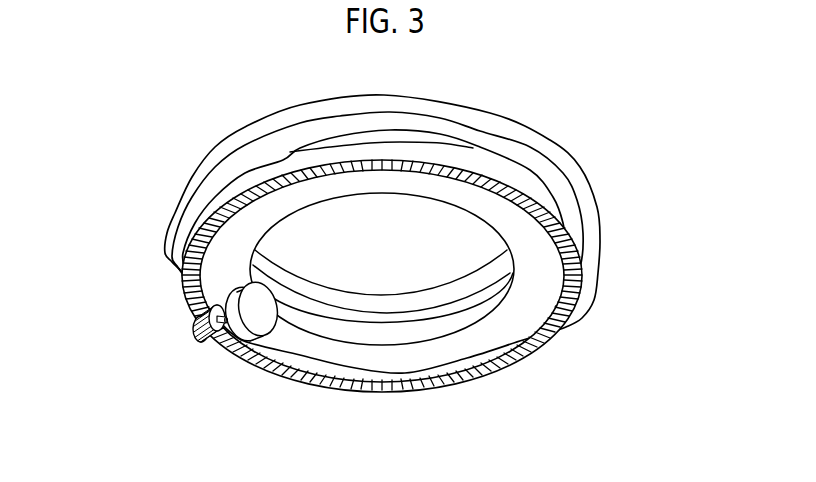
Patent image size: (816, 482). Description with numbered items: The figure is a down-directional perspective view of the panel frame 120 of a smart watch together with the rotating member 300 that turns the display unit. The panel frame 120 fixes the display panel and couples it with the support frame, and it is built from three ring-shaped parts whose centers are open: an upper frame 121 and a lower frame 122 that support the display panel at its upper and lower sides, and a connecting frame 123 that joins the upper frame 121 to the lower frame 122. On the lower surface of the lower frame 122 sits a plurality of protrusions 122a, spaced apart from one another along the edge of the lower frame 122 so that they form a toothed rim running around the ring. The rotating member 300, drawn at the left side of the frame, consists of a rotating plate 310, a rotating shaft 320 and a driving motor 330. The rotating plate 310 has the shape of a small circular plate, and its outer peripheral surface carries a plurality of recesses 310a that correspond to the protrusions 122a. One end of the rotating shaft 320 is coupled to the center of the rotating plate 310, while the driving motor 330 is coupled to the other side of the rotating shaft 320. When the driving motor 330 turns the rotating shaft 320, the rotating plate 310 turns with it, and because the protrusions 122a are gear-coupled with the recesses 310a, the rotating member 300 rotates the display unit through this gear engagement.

The panel frame 120 is at (444, 277).
The upper frame 121 is at (578, 175).
The lower frame 122 is at (432, 310).
The protrusions 122a is at (397, 382).
The connecting frame 123 is at (392, 122).
The rotating member 300 is at (180, 369).
The rotating plate 310 is at (151, 366).
The recesses 310a is at (193, 322).
The rotating shaft 320 is at (221, 324).
The driving motor 330 is at (251, 330).